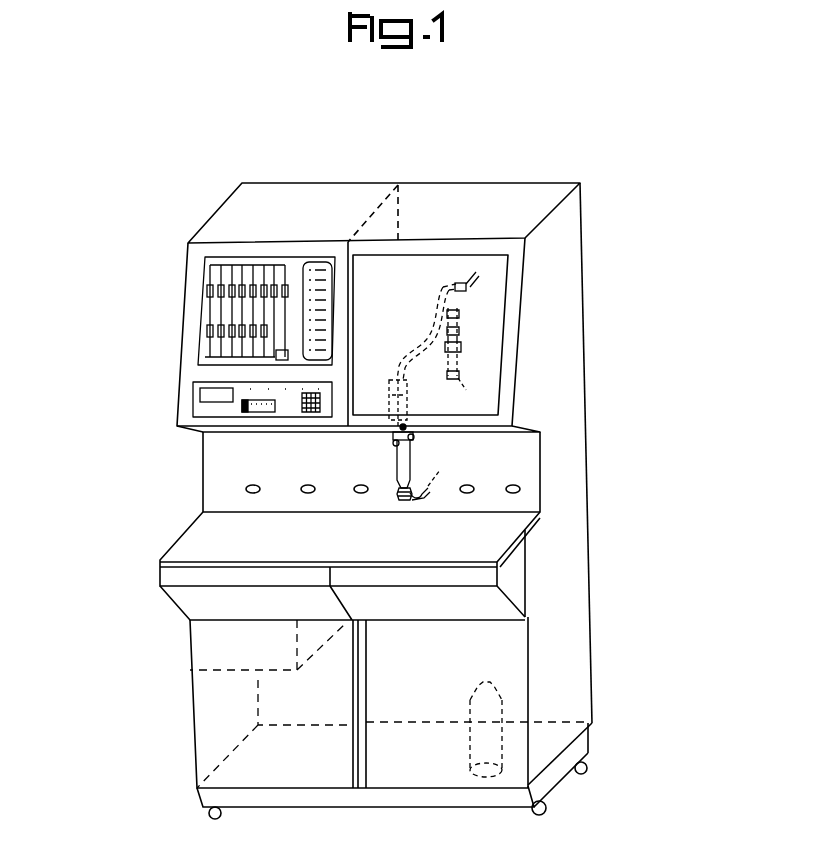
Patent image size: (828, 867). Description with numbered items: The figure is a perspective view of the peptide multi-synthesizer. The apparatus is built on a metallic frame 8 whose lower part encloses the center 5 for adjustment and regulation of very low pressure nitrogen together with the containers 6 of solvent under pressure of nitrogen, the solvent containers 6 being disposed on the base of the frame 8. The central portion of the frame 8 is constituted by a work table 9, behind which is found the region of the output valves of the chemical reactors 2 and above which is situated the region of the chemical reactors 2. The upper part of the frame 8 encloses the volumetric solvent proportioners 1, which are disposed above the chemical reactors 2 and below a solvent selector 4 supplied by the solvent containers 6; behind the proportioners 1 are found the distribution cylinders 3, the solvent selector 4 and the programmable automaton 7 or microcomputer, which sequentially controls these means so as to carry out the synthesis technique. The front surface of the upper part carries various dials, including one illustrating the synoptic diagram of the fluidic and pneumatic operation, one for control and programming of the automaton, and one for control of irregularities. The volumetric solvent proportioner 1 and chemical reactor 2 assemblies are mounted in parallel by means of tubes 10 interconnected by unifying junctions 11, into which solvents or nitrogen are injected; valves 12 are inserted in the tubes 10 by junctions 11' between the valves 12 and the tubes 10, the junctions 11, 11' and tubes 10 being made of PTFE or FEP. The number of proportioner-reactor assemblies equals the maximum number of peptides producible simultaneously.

The volumetric solvent proportioner 1 is at (410, 397).
The chemical reactor 2 is at (402, 462).
The distribution cylinder 3 is at (455, 318).
The solvent selector 4 is at (455, 356).
The center for adjustment and regulation of very low pressure nitrogen 5 is at (260, 643).
The solvent container 6 is at (483, 703).
The programmable automaton 7 is at (277, 207).
The metallic frame 8 is at (475, 200).
The work table 9 is at (250, 540).
The tube 10 is at (440, 299).
The unifying junction 11 is at (575, 264).
The valve-tube junction 11' is at (553, 501).
The valve 12 is at (418, 491).